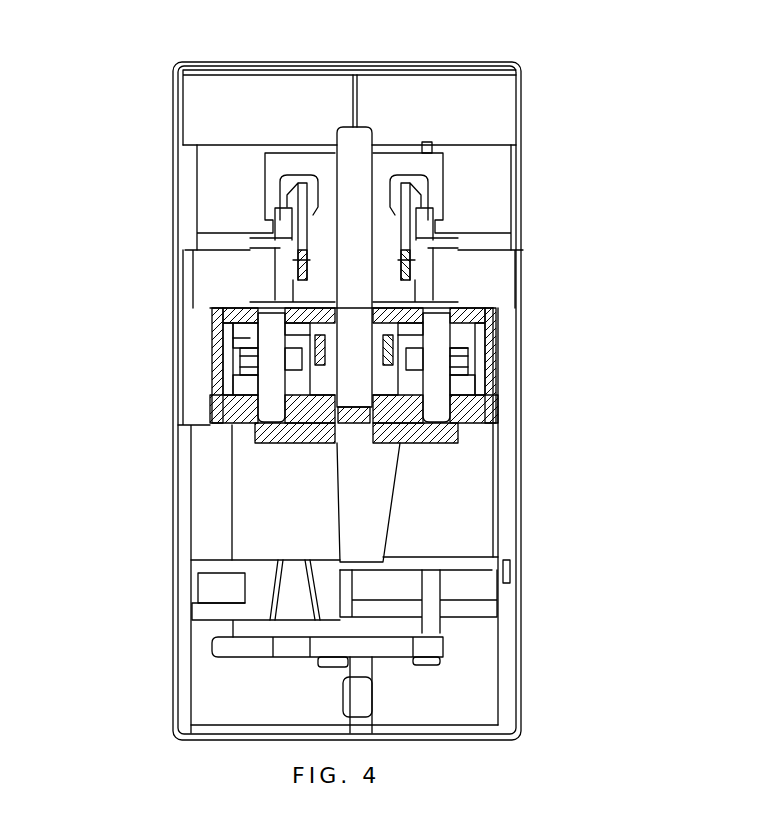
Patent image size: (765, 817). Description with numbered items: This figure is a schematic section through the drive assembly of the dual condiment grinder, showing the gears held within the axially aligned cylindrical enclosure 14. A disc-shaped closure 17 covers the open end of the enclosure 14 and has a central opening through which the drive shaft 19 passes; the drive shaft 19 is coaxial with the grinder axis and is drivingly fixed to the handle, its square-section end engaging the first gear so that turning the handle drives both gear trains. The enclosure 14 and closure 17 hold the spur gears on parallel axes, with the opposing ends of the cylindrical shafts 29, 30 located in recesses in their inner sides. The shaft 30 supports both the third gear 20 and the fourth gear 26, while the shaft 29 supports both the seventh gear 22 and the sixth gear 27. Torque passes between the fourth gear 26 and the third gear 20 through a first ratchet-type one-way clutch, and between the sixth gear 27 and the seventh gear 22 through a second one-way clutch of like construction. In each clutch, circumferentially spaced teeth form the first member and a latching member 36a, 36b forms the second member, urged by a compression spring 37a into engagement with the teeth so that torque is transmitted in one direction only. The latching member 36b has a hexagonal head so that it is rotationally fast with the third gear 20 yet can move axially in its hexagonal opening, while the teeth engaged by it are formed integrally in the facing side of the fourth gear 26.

The cylindrical enclosure 14 is at (310, 405).
The disc-shaped closure 17 is at (297, 305).
The drive shaft 19 is at (358, 155).
The third gear 20 is at (250, 338).
The seventh gear 22 is at (468, 340).
The fourth gear 26 is at (247, 380).
The sixth gear 27 is at (455, 383).
The cylindrical shaft 29 is at (432, 320).
The cylindrical shaft 30 is at (273, 330).
The latching member 36a is at (455, 363).
The latching member 36b is at (253, 365).
The compression spring 37a is at (455, 353).